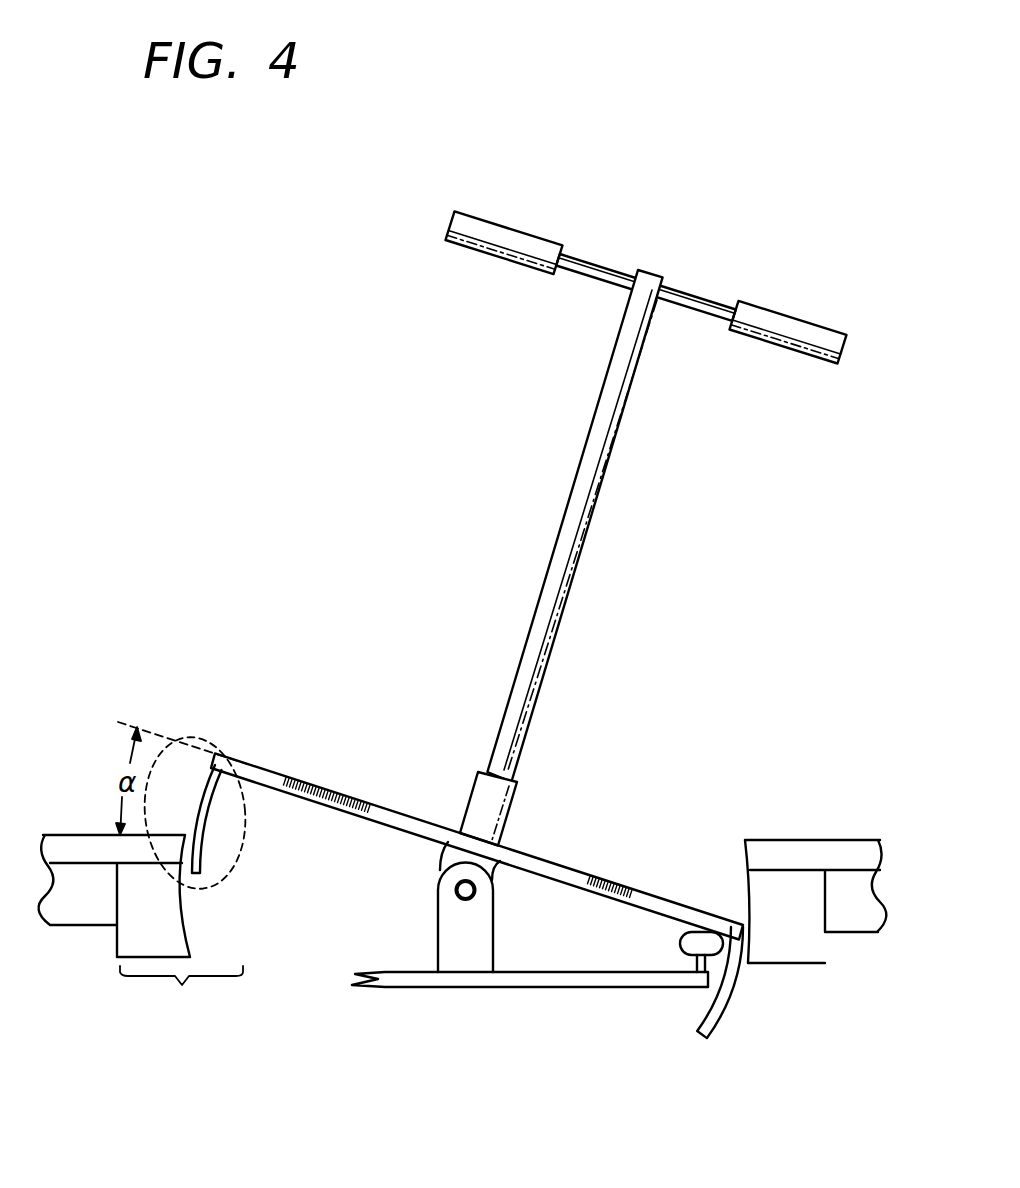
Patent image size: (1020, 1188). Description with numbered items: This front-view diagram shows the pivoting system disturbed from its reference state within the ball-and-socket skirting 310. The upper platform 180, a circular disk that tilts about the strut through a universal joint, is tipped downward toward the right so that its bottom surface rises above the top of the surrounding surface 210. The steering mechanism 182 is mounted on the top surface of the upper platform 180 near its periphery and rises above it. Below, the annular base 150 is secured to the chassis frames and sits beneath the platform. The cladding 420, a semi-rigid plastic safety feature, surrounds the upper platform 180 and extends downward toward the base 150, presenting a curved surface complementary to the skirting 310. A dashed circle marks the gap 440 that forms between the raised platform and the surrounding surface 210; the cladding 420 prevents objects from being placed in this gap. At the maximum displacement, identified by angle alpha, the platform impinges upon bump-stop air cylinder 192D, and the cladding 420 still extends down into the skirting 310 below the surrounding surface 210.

The steering mechanism 182 is at (595, 457).
The upper platform 180 is at (537, 858).
The cladding 420 is at (204, 787).
The gap 440 is at (218, 755).
The surrounding surface 210 is at (85, 833).
The ball-and-socket skirting 310 is at (181, 994).
The annular base 150 is at (415, 988).
The bump-stop air cylinder 192D is at (680, 941).